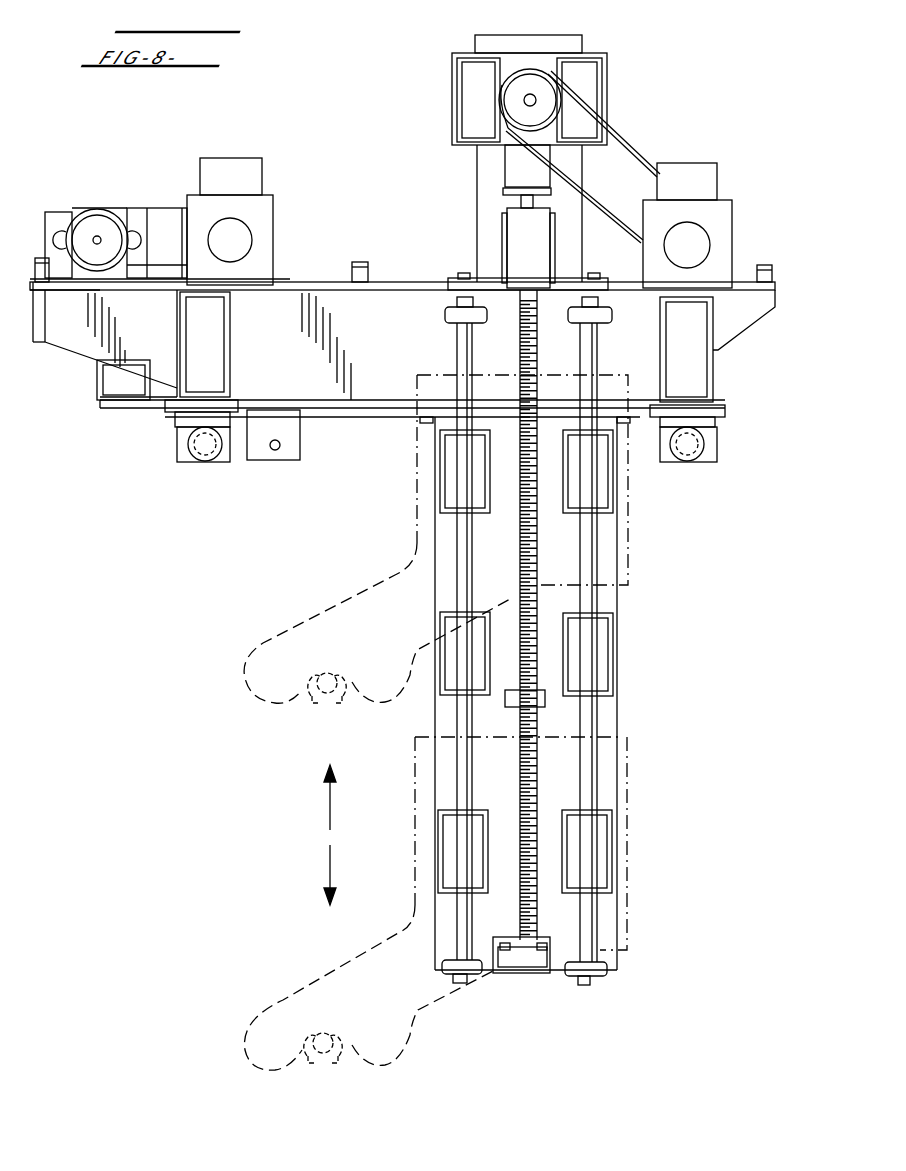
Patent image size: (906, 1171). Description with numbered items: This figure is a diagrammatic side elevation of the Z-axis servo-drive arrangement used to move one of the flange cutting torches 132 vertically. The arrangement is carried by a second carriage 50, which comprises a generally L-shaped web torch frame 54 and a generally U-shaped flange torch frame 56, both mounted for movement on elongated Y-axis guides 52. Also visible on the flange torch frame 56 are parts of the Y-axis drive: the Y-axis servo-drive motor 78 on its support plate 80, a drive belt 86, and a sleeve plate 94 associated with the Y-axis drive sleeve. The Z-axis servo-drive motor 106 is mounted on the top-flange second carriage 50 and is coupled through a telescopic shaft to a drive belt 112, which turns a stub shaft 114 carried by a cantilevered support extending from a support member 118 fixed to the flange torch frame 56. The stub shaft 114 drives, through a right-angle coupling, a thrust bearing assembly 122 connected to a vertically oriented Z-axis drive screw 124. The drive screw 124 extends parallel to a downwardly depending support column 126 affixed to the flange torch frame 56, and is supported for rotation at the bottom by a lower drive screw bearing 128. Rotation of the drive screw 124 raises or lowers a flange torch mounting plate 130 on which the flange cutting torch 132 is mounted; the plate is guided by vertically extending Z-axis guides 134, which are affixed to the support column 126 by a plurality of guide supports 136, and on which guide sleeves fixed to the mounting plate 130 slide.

The second carriage 50 is at (416, 282).
The Y-axis guide 52 is at (206, 452).
The web torch frame 54 is at (95, 362).
The flange torch frame 56 is at (398, 347).
The Y-axis servo-drive motor 78 is at (252, 236).
The support plate 80 is at (60, 284).
The drive belt 86 is at (126, 213).
The sleeve plate 94 is at (60, 216).
The Z-axis servo-drive motor 106 is at (709, 238).
The drive belt 112 is at (622, 142).
The stub shaft 114 is at (537, 100).
The support member 118 is at (580, 44).
The thrust bearing assembly 122 is at (552, 240).
The Z-axis drive screw 124 is at (538, 326).
The support column 126 is at (619, 597).
The lower drive screw bearing 128 is at (528, 970).
The flange torch mounting plate 130 is at (345, 600).
The flange cutting torch 132 is at (320, 702).
The Z-axis guide 134 is at (458, 714).
The guide support 136 is at (448, 468).